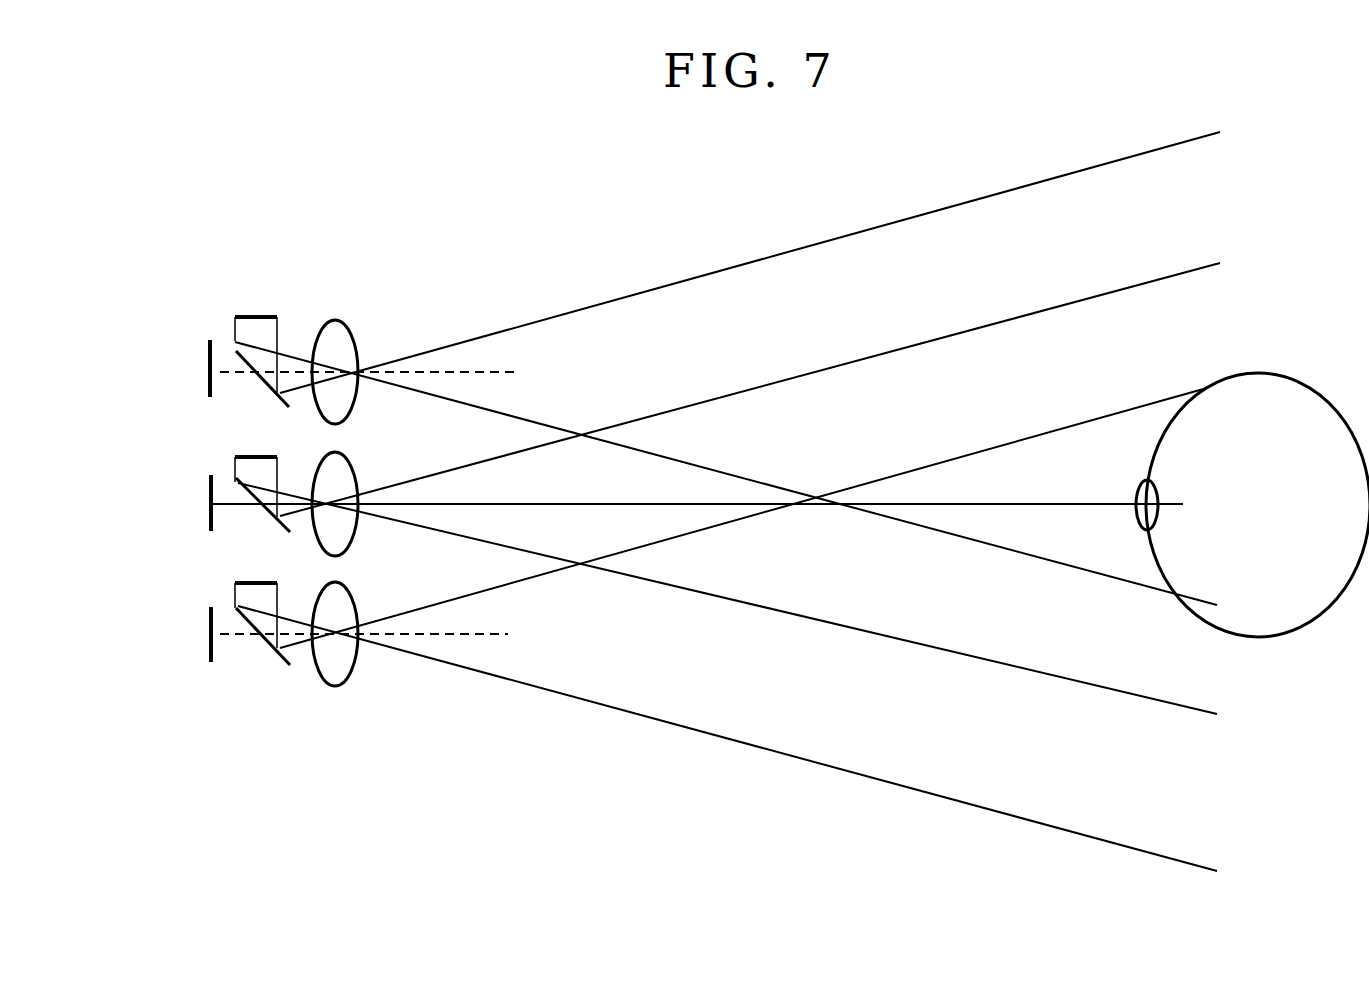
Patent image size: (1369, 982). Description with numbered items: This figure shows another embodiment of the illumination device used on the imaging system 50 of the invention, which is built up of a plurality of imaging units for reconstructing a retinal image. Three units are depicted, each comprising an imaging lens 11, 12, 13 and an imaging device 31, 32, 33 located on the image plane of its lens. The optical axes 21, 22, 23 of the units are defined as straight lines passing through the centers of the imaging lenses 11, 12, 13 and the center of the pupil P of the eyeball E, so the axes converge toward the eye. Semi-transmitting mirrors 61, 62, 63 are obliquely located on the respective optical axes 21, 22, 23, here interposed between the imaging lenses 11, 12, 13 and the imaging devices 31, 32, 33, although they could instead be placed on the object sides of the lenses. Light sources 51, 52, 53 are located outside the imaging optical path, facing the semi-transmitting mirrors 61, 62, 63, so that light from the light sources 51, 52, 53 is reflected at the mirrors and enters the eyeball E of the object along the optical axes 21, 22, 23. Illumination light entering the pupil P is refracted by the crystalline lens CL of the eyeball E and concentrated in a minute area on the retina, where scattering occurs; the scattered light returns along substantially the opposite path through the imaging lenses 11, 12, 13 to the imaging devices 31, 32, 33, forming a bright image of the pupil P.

The imaging lens 11 is at (342, 322).
The imaging lens 12 is at (342, 457).
The imaging lens 13 is at (342, 585).
The optical axis 21 is at (468, 372).
The optical axis 22 is at (468, 504).
The optical axis 23 is at (468, 634).
The imaging device 31 is at (210, 356).
The imaging device 32 is at (211, 487).
The imaging device 33 is at (211, 625).
The light source 51 is at (257, 316).
The light source 52 is at (257, 455).
The light source 53 is at (257, 581).
The semi-transmitting mirror 61 is at (262, 378).
The semi-transmitting mirror 62 is at (262, 512).
The semi-transmitting mirror 63 is at (262, 648).
The eyeball E is at (1279, 352).
The crystalline lens CL is at (1142, 485).
The pupil P is at (1126, 546).
The imaging system 50 is at (716, 835).